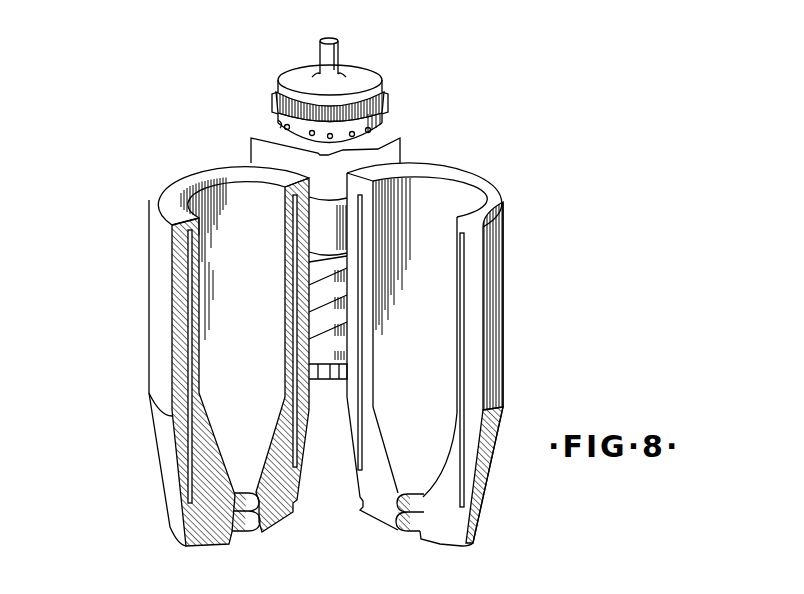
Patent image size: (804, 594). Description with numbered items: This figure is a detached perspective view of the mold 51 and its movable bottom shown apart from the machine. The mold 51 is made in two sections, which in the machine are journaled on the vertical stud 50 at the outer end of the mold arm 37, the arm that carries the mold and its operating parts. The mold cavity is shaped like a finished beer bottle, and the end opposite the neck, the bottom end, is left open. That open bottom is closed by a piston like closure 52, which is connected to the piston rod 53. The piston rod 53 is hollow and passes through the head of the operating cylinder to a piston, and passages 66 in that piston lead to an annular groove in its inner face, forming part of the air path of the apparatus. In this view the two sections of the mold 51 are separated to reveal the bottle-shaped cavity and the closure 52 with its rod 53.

The mold arm 37 is at (382, 152).
The vertical stud 50 is at (328, 381).
The mold 51 is at (158, 280).
The piston like closure 52 is at (365, 83).
The piston rod 53 is at (328, 53).
The passages 66 is at (280, 126).